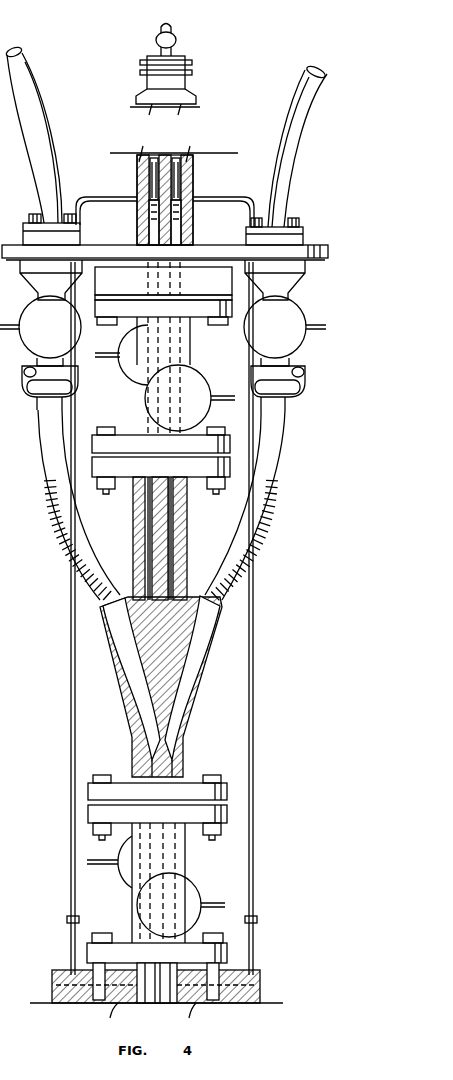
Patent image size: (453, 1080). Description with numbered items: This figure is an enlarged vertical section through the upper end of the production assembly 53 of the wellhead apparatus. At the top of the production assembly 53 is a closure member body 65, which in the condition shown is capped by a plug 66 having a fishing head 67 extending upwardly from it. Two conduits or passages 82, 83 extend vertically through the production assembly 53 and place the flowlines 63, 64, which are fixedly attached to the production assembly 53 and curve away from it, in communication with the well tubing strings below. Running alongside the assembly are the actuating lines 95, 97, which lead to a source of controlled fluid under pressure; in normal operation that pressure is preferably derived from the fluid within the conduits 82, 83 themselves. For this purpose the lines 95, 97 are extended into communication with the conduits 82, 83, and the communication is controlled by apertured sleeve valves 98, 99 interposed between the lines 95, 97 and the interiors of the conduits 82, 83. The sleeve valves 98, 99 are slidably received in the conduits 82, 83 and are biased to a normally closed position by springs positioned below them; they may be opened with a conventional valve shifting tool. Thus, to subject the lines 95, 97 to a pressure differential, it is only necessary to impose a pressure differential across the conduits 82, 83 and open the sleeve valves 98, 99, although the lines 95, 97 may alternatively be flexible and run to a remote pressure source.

The production assembly 53 is at (195, 668).
The flowline 63 is at (273, 432).
The flowline 64 is at (43, 428).
The closure member body 65 is at (193, 163).
The plug 66 is at (193, 66).
The fishing head 67 is at (177, 38).
The conduit 82 is at (153, 231).
The conduit 83 is at (185, 232).
The actuating line 95 is at (71, 714).
The primary actuating line 97 is at (253, 715).
The apertured sleeve valve 98 is at (155, 183).
The apertured sleeve valve 99 is at (182, 186).